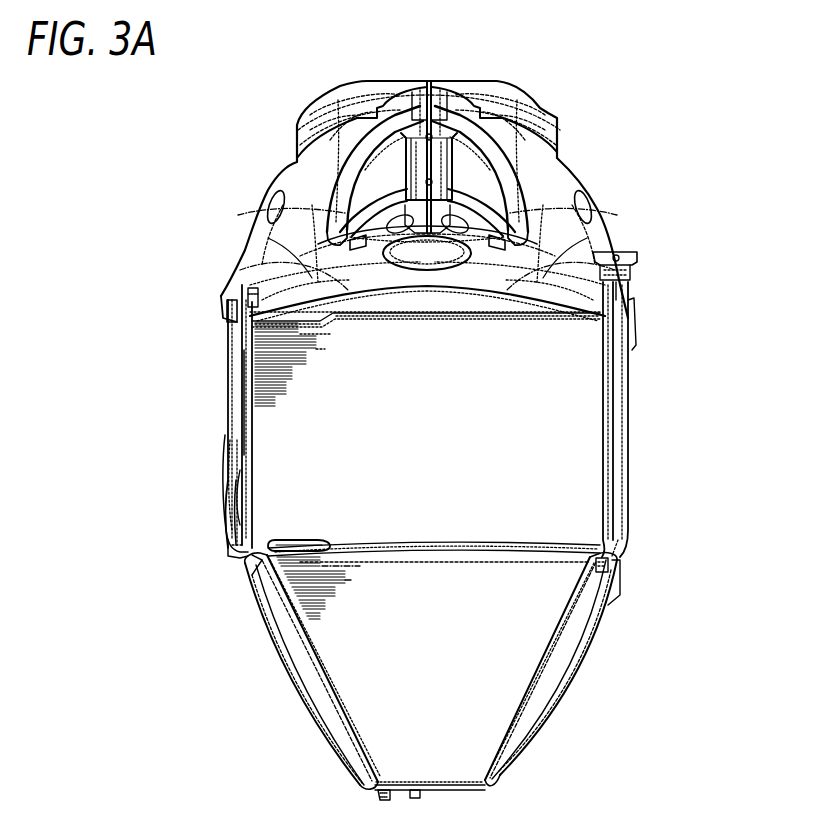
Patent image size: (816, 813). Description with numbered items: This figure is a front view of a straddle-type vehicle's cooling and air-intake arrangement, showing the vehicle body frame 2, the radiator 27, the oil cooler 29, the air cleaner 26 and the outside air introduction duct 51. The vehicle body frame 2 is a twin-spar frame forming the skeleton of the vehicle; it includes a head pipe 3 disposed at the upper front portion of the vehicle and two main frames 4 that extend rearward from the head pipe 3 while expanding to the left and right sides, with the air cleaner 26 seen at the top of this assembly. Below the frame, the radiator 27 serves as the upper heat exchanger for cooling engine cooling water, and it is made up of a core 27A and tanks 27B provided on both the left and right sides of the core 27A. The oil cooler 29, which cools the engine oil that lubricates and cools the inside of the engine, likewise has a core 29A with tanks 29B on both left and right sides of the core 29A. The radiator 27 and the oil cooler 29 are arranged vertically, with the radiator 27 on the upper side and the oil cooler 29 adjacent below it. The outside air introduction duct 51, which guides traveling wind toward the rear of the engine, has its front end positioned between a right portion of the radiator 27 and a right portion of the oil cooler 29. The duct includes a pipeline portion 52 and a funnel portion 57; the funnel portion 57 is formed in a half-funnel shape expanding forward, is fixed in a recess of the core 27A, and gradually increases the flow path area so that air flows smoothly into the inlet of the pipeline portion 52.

The vehicle body frame 2 is at (426, 182).
The head pipe 3 is at (447, 165).
The main frame 4 is at (258, 213).
The air cleaner 26 is at (340, 95).
The radiator 27 is at (427, 404).
The core 27A is at (548, 411).
The tank 27B is at (237, 433).
The oil cooler 29 is at (447, 676).
The core 29A is at (510, 634).
The tank 29B is at (312, 676).
The outside air introduction duct 51 is at (214, 527).
The pipeline portion 52 is at (232, 545).
The funnel portion 57 is at (298, 540).